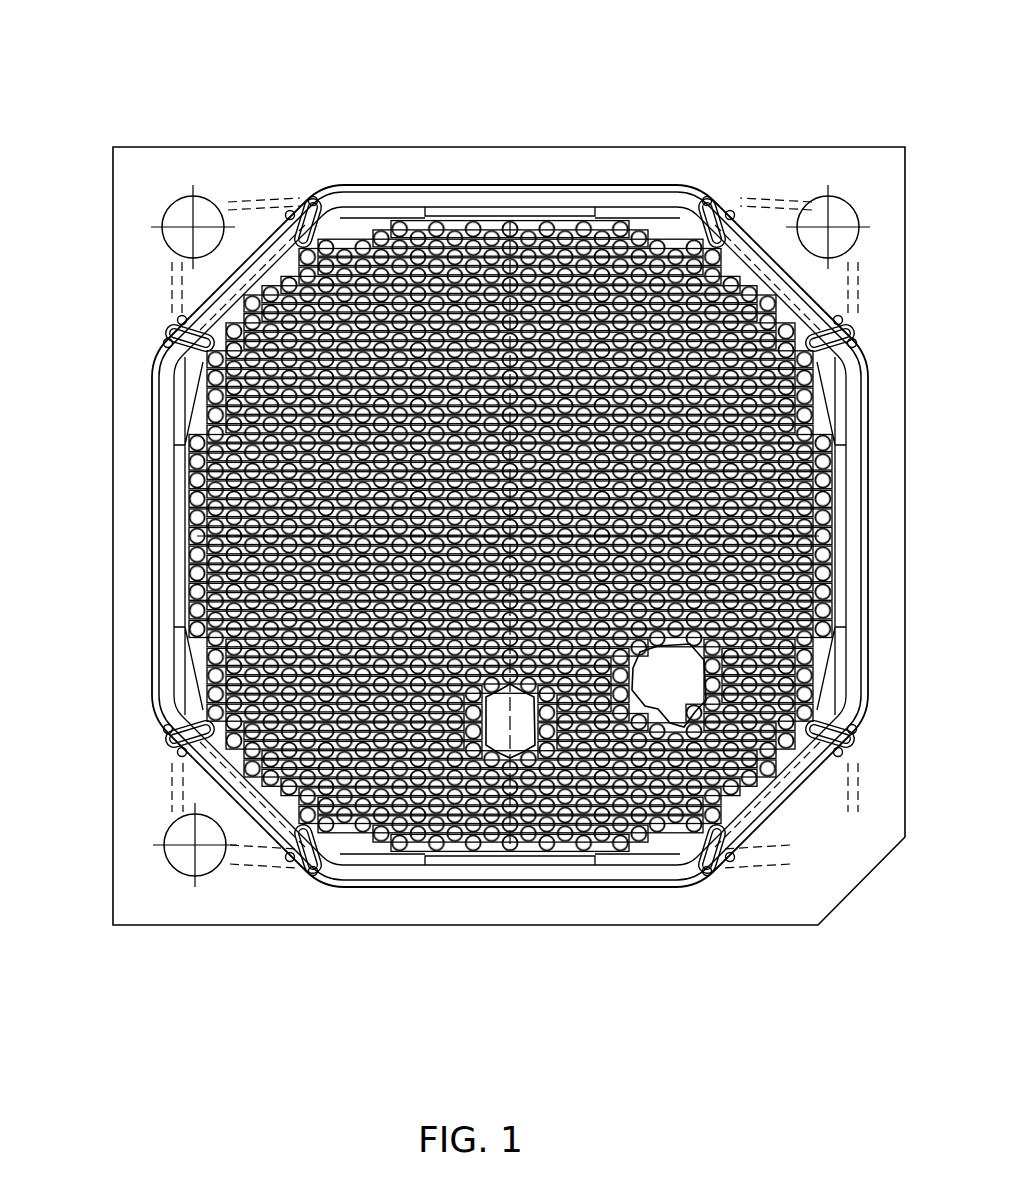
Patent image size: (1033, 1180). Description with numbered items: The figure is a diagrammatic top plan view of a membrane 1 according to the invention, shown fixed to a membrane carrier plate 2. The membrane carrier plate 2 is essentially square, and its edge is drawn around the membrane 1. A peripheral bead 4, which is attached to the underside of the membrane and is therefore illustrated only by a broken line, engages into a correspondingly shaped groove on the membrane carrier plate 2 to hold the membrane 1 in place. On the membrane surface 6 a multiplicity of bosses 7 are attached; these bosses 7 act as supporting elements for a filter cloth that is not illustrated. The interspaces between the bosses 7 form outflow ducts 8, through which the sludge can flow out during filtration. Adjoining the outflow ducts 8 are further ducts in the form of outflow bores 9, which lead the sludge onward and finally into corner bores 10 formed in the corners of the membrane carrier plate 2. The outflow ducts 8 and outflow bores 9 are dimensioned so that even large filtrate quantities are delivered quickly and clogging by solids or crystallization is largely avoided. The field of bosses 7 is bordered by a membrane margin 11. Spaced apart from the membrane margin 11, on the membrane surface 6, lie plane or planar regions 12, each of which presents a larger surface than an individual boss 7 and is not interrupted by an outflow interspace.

The membrane 1 is at (536, 178).
The membrane carrier plate 2 is at (216, 907).
The peripheral bead 4 is at (172, 288).
The membrane surface 6 is at (630, 222).
The bosses 7 is at (712, 270).
The outflow ducts 8 is at (375, 840).
The outflow bores 9 is at (333, 207).
The corner bores 10 is at (180, 238).
The membrane margin 11 is at (456, 205).
The planar regions 12 is at (518, 742).